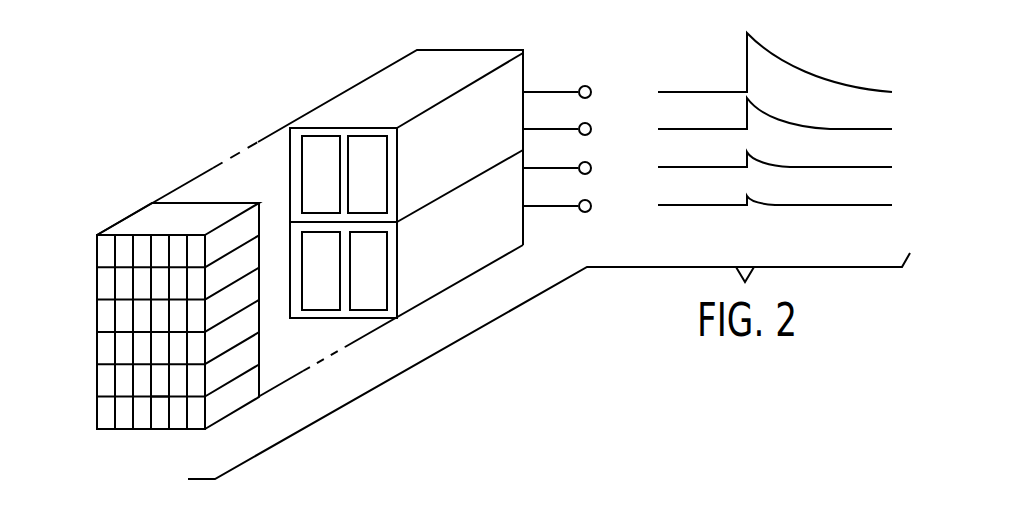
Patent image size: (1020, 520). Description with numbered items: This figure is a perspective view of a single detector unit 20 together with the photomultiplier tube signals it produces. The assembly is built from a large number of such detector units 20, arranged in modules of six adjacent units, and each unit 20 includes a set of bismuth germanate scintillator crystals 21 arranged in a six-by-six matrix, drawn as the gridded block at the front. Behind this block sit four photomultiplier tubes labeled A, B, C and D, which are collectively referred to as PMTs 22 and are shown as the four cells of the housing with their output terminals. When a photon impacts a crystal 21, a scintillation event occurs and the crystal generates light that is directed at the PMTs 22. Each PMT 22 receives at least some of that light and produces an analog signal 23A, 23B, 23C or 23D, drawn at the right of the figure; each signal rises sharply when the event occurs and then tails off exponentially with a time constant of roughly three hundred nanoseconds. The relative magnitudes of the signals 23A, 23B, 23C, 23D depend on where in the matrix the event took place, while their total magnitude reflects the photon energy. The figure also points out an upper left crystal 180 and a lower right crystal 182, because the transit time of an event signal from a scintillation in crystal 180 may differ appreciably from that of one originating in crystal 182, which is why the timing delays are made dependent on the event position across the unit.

The detector unit 20 is at (317, 78).
The scintillator crystal 21 is at (147, 317).
The photomultiplier tube 22 is at (473, 168).
The upper left crystal 180 is at (101, 240).
The lower right crystal 182 is at (162, 424).
The analog signal 23A is at (788, 64).
The analog signal 23B is at (767, 108).
The analog signal 23C is at (760, 156).
The analog signal 23D is at (755, 196).